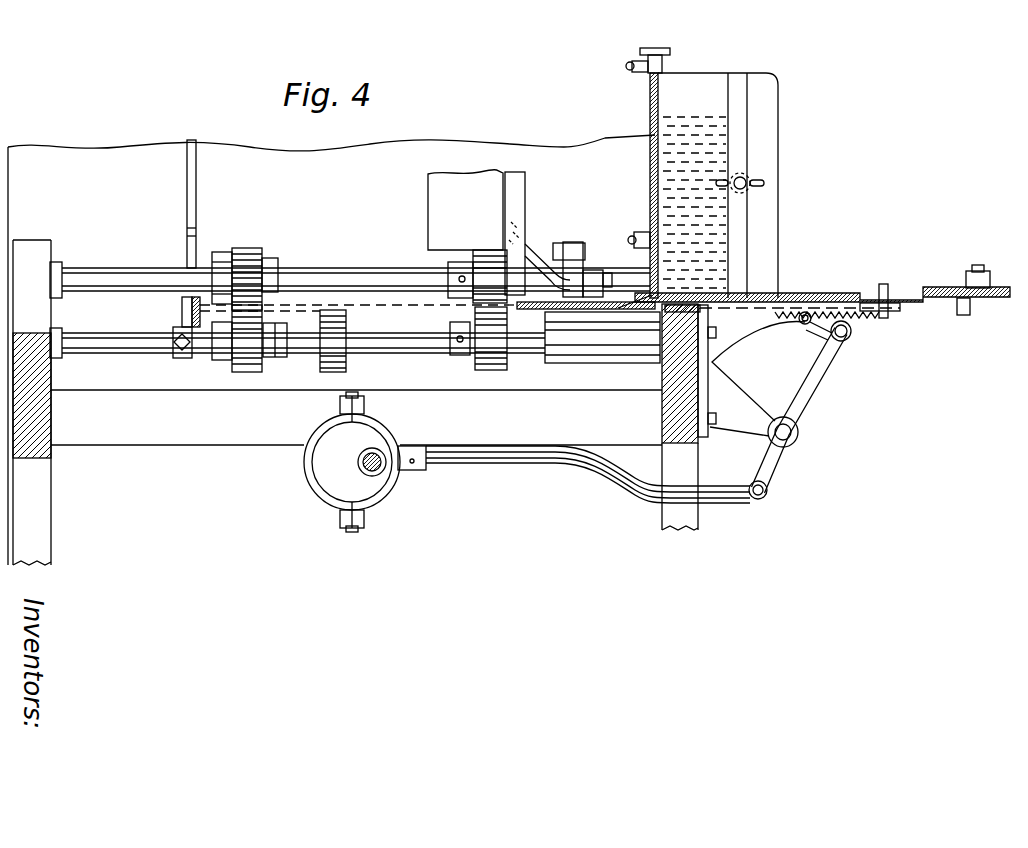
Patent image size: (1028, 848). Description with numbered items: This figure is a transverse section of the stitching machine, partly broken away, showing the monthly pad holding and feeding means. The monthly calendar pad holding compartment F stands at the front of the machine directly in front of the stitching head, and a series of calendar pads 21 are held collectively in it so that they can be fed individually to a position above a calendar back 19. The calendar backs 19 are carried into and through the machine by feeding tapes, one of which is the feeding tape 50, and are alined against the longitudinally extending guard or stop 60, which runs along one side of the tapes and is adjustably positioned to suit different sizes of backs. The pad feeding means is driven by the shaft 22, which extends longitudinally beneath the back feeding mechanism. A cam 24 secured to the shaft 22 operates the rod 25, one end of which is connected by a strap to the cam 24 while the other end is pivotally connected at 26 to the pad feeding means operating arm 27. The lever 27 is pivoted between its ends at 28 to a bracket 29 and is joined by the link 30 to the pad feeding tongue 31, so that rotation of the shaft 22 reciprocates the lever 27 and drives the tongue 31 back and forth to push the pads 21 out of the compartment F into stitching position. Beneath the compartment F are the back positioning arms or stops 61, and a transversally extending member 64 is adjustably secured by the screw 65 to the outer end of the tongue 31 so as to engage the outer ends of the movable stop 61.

The feeding tape 50 is at (246, 250).
The guard or stop 60 is at (182, 308).
The calendar back 19 is at (370, 303).
The calendar pad 21 is at (690, 116).
The monthly calendar pad holding compartment F is at (717, 103).
The pad feeding tongue 31 is at (790, 294).
The back positioning arm or stop 61 is at (888, 312).
The screw 65 is at (980, 275).
The transversally extending member 64 is at (972, 310).
The link 30 is at (812, 328).
The pad feeding means operating arm 27 is at (812, 395).
The pivot 28 is at (798, 433).
The bracket 29 is at (742, 431).
The pivotal connection 26 is at (757, 500).
The shaft 22 is at (380, 452).
The cam 24 is at (366, 492).
The rod 25 is at (553, 456).